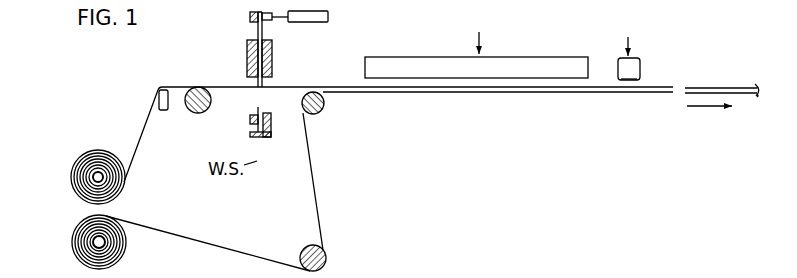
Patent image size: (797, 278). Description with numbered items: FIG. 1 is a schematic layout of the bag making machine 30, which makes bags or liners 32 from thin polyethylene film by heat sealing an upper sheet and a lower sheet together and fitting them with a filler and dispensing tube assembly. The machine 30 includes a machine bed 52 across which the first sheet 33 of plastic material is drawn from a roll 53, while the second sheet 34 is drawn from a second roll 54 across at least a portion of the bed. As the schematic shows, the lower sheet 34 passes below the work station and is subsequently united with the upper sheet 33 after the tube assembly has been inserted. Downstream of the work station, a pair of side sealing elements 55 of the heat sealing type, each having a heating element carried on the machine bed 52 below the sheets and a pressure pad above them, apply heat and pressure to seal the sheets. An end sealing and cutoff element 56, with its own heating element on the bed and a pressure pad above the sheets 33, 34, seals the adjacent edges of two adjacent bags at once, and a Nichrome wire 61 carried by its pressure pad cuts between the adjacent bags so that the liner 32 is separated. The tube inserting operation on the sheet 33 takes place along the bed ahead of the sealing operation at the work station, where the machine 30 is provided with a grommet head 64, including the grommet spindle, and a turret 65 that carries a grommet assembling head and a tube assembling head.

The bag making machine 30 is at (454, 151).
The liner 32 is at (708, 85).
The first sheet 33 is at (286, 87).
The second sheet 34 is at (317, 203).
The machine bed 52 is at (511, 98).
The roll 53 is at (75, 174).
The second roll 54 is at (75, 242).
The side sealing elements 55 is at (438, 56).
The end sealing and cutoff element 56 is at (633, 63).
The Nichrome wire 61 is at (631, 81).
The grommet head 64 is at (256, 127).
The turret 65 is at (238, 24).